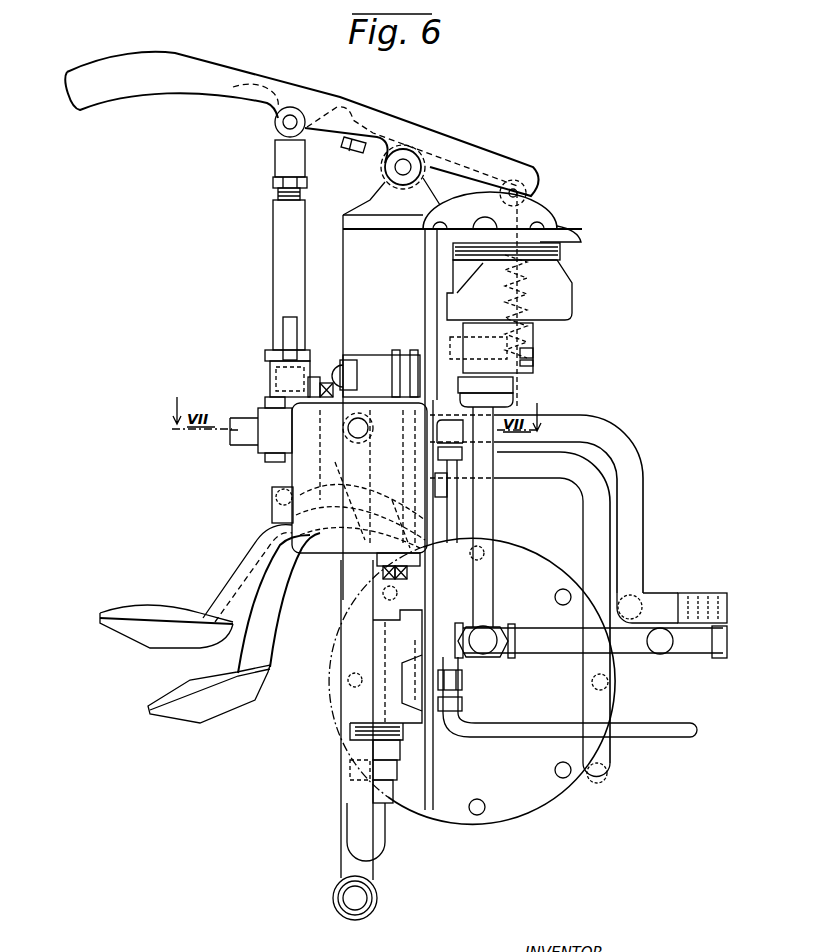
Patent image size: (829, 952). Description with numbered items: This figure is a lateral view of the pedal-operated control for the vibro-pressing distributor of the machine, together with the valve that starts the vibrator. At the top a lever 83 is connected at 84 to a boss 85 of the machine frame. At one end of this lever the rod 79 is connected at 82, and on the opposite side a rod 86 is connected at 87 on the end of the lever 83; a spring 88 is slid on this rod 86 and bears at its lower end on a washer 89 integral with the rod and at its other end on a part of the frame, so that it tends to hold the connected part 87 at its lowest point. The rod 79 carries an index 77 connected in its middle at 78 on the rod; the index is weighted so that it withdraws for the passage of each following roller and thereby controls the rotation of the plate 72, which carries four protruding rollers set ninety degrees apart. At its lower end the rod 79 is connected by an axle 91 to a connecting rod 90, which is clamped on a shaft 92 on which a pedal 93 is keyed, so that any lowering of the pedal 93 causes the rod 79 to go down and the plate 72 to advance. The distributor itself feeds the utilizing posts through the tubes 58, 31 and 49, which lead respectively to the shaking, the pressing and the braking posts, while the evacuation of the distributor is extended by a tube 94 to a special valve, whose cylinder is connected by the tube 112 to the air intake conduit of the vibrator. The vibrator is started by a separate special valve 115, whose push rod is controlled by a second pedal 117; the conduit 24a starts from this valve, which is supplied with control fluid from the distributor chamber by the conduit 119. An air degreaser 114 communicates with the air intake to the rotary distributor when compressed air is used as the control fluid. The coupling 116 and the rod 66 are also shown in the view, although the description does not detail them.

The lever 83 is at (229, 68).
The connected part 82 is at (287, 124).
The connection of lever to boss 84 is at (406, 162).
The boss 85 is at (381, 190).
The connection of rod 86 to lever 87 is at (521, 198).
The rod 86 is at (541, 222).
The rod 79 is at (282, 266).
The index 77 is at (288, 343).
The middle connection of index 78 is at (264, 359).
The plate 72 is at (310, 372).
The air degreaser 114 is at (378, 438).
The spring 88 is at (530, 352).
The washer 89 is at (533, 363).
The tube 94 is at (498, 407).
The axle 91 is at (274, 491).
The connecting rod 90 is at (272, 515).
The shaft 92 is at (380, 515).
The tube 31 is at (598, 490).
The tube 112 is at (488, 517).
The tube 58 is at (640, 552).
The pedal 93 is at (158, 605).
The coupling 116 is at (380, 563).
The second pedal 117 is at (239, 714).
The special valve 115 is at (383, 703).
The conduit 24a is at (558, 642).
The tube 49 is at (540, 728).
The rod 66 is at (346, 868).
The conduit 119 is at (386, 849).